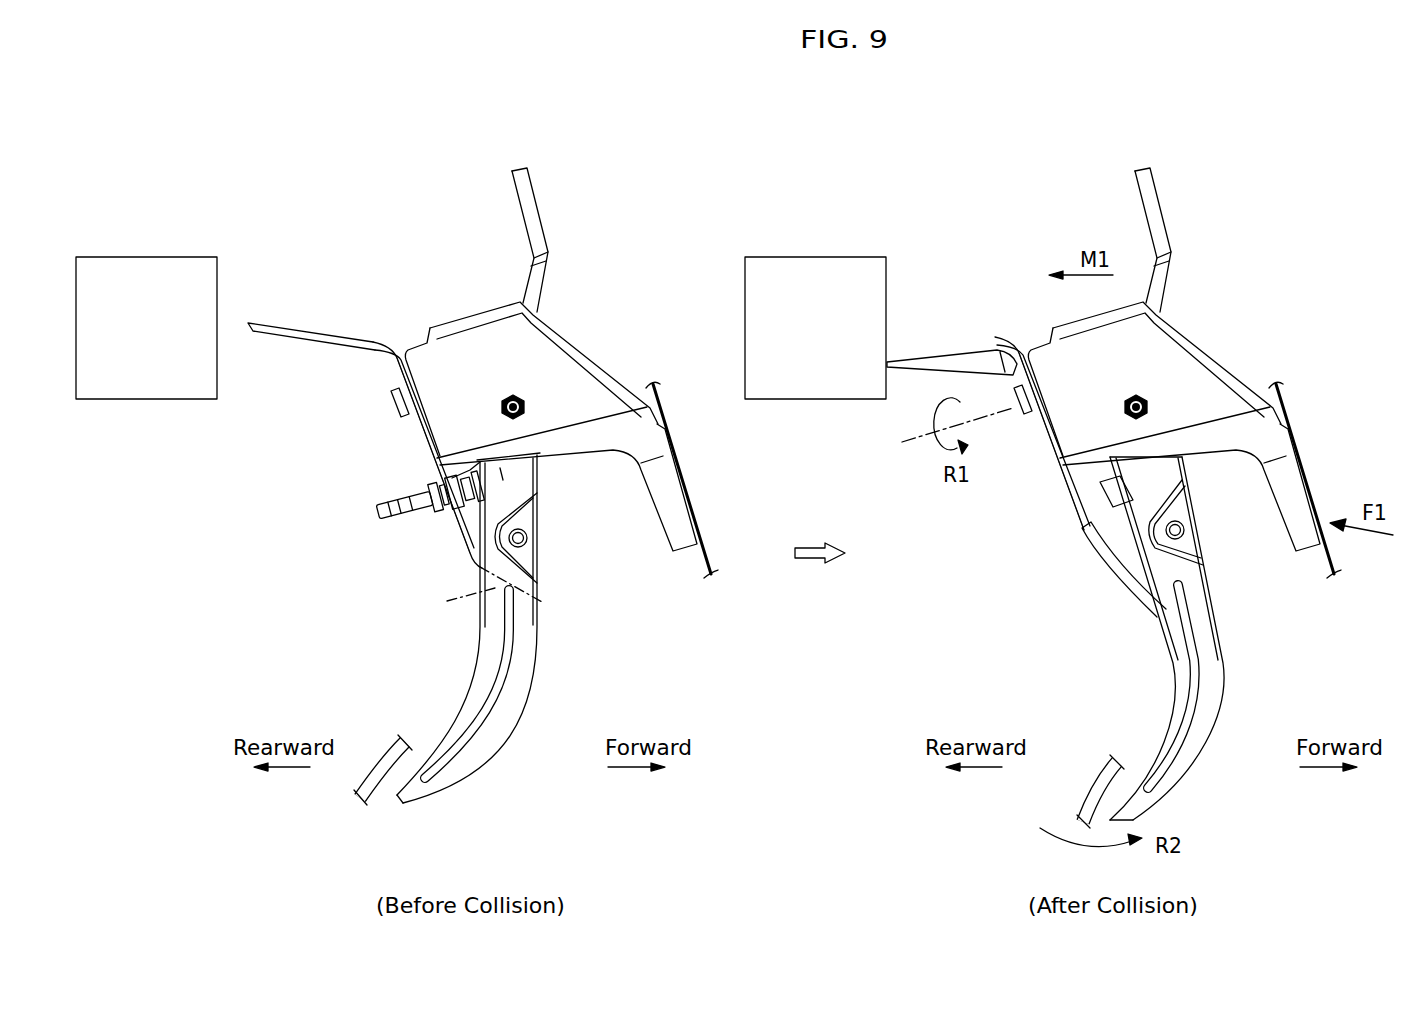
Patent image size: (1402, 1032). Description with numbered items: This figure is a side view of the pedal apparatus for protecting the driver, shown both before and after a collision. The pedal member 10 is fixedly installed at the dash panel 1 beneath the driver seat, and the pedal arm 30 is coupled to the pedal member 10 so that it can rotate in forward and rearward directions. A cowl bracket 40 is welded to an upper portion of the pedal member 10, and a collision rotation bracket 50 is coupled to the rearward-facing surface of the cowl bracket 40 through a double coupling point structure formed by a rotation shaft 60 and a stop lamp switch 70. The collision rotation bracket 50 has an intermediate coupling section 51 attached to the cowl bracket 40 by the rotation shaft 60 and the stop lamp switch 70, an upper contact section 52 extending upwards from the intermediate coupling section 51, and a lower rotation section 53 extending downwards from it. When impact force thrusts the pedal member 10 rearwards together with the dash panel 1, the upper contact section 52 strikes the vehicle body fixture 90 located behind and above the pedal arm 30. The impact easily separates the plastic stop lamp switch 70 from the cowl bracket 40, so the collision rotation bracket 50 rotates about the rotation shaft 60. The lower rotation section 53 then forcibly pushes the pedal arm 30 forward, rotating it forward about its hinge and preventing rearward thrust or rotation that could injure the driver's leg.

The dash panel 1 is at (697, 514).
The pedal member 10 is at (553, 355).
The pedal arm 30 is at (525, 678).
The cowl bracket 40 is at (538, 200).
The collision rotation bracket 50 is at (330, 326).
The intermediate coupling section 51 is at (415, 440).
The upper contact section 52 is at (272, 322).
The lower rotation section 53 is at (478, 592).
The rotation shaft 60 is at (393, 398).
The stop lamp switch 70 is at (378, 510).
The vehicle body fixture 90 is at (152, 257).